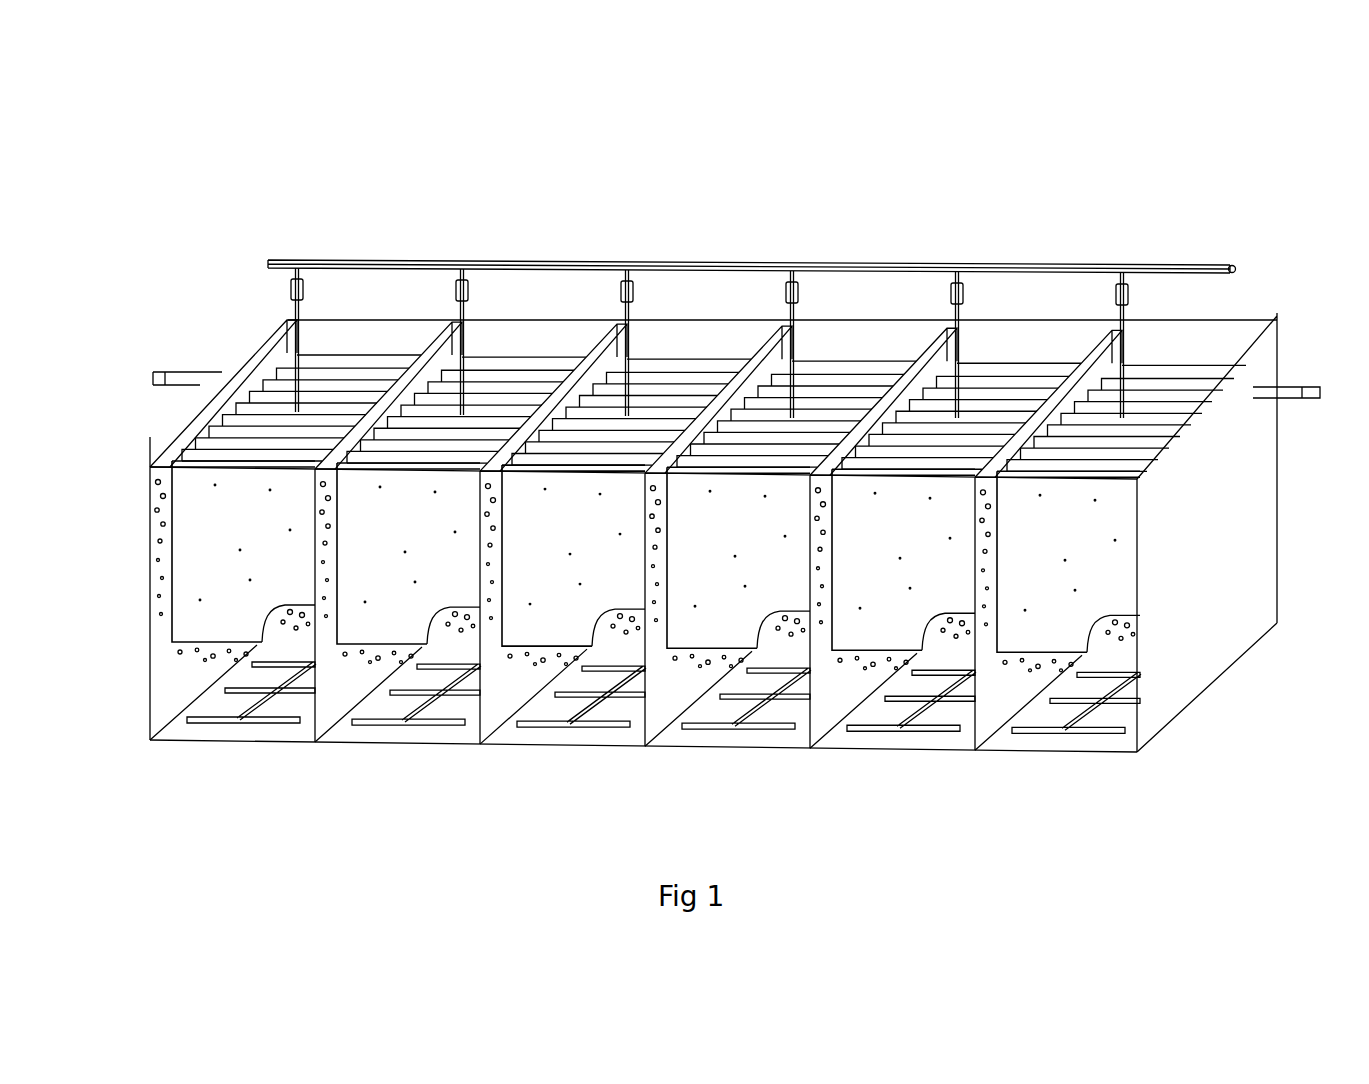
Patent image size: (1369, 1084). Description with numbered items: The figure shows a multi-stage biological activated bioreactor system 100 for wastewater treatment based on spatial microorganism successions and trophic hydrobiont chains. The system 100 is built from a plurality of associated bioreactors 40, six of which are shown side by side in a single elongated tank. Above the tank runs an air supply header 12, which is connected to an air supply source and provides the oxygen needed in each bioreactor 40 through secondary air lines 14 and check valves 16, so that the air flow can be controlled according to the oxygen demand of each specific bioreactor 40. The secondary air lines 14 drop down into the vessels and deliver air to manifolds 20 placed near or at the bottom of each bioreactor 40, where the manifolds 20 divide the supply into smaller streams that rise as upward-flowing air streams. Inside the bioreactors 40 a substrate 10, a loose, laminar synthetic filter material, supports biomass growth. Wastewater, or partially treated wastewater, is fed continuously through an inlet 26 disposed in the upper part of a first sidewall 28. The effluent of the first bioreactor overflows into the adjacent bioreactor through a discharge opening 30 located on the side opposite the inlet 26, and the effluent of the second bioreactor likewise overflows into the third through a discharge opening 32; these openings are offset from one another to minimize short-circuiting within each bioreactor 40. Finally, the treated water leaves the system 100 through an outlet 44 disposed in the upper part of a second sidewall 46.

The multi-stage biological activated bioreactor system 100 is at (987, 151).
The substrate 10 is at (152, 668).
The air supply header 12 is at (270, 258).
The secondary air lines 14 is at (460, 279).
The check valves 16 is at (292, 290).
The manifolds 20 is at (1028, 753).
The inlet 26 is at (153, 385).
The first sidewall 28 is at (152, 610).
The discharge opening 30 is at (333, 458).
The discharge opening 32 is at (588, 355).
The bioreactors 40 is at (735, 737).
The outlet 44 is at (1302, 400).
The second sidewall 46 is at (1222, 548).